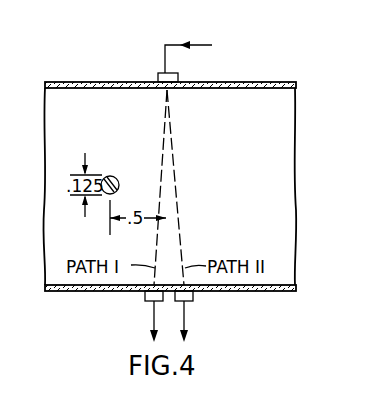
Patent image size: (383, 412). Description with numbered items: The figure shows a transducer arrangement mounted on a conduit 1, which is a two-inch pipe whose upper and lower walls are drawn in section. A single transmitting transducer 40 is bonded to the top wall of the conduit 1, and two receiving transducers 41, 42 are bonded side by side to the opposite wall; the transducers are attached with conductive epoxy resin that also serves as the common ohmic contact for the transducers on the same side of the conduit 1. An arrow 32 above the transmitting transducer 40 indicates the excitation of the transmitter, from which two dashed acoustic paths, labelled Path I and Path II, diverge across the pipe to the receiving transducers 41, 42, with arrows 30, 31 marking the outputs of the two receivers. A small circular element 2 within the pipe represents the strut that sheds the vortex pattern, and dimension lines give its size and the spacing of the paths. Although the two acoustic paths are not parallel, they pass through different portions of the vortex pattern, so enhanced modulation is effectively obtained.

The conduit 1 is at (243, 83).
The object 2 is at (116, 178).
The path I beam 30 is at (152, 318).
The path II beam 31 is at (186, 318).
The light source direction 32 is at (189, 45).
The transmitting transducer 40 is at (178, 75).
The receiving transducer 41 is at (145, 297).
The receiving transducer 42 is at (193, 297).